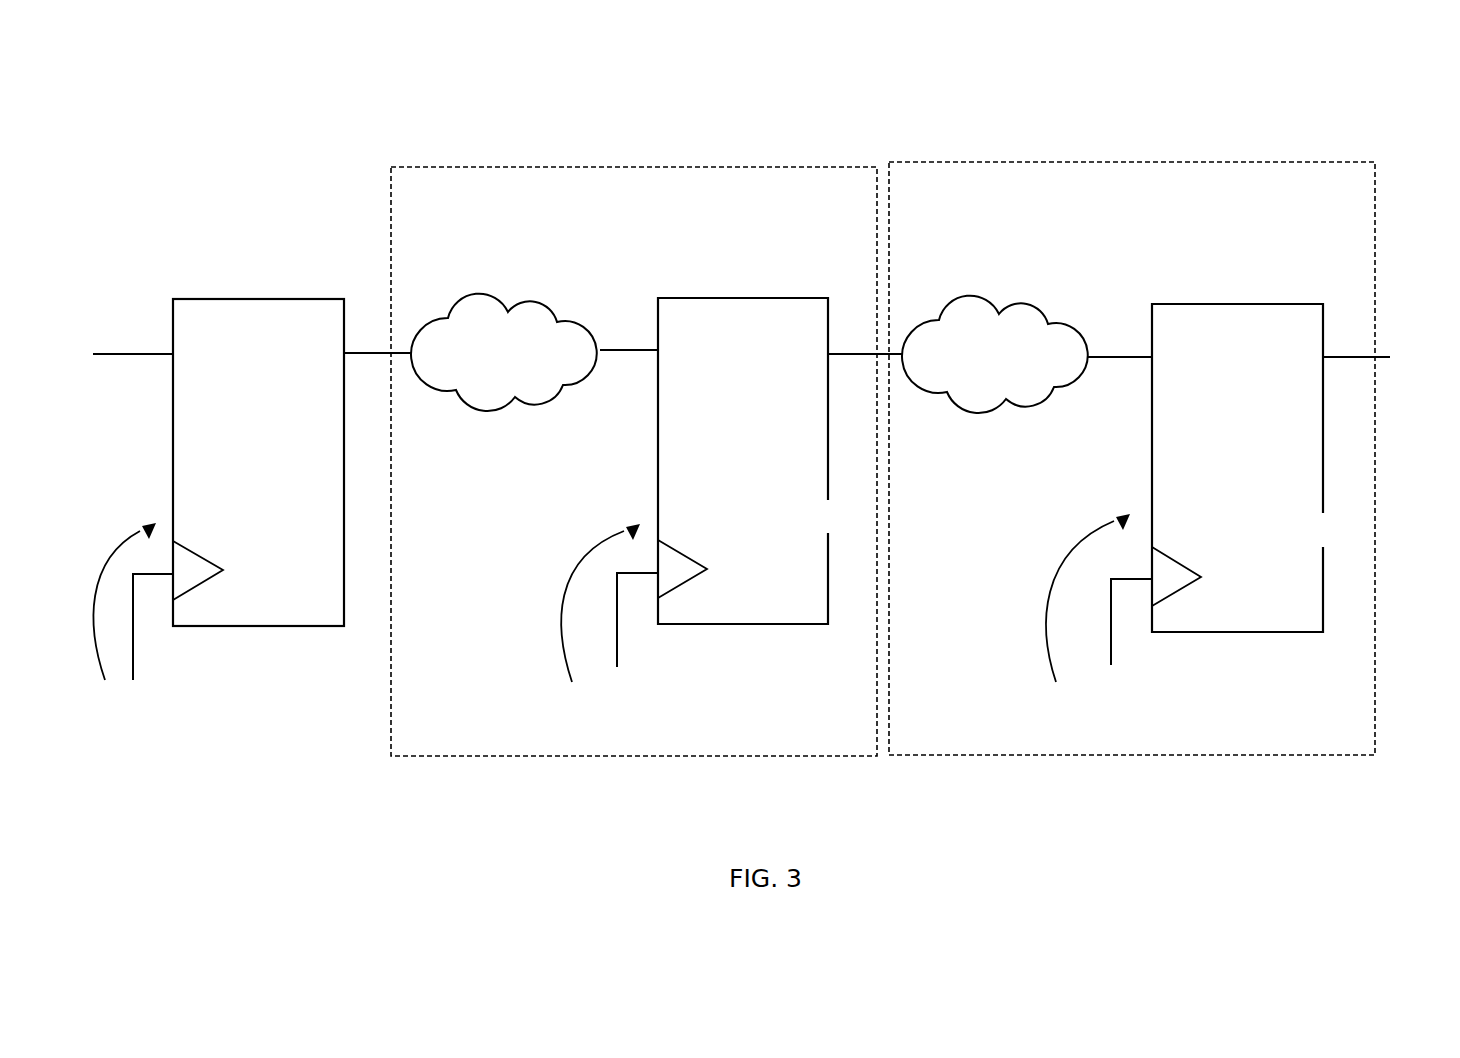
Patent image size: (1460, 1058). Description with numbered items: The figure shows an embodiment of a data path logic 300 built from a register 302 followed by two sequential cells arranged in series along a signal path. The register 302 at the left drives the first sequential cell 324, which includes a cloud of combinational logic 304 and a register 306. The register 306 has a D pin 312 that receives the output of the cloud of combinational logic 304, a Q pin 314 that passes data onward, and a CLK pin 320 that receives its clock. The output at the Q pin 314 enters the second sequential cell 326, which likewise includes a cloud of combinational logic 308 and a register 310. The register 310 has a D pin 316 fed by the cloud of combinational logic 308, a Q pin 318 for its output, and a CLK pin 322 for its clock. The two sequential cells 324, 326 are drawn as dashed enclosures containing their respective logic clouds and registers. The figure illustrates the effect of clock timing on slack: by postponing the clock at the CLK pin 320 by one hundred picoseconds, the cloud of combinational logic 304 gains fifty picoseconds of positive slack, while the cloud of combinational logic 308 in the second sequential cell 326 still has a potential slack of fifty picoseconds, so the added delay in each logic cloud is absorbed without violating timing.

The data path logic 300 is at (1351, 116).
The register 302 is at (343, 673).
The cloud of combinational logic 304 is at (532, 305).
The register 306 is at (828, 672).
The cloud of combinational logic 308 is at (1023, 307).
The register 310 is at (1321, 678).
The D pin 312 is at (688, 325).
The Q pin 314 is at (796, 325).
The D pin 316 is at (1190, 321).
The Q pin 318 is at (1293, 331).
The CLK pin 320 is at (762, 519).
The CLK pin 322 is at (1258, 530).
The sequential cell 324 is at (650, 148).
The sequential cell 326 is at (1149, 144).